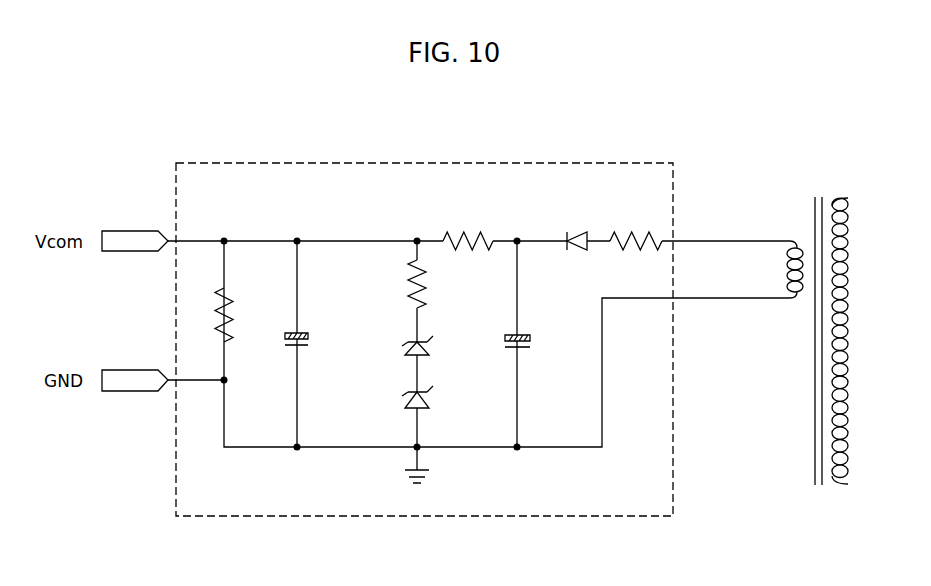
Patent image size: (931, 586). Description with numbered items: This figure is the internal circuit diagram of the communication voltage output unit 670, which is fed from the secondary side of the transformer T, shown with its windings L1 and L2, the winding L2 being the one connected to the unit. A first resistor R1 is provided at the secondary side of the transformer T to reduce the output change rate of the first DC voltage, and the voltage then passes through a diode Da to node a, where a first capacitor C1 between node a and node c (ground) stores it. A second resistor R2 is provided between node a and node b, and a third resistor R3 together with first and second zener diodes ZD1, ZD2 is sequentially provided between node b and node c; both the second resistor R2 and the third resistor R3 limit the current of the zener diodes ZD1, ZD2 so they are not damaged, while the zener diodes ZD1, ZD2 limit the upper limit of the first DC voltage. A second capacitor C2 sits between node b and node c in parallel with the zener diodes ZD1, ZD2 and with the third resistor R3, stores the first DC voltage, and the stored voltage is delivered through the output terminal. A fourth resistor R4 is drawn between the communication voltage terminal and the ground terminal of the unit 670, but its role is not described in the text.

The communication voltage output unit 670 is at (617, 163).
The first resistor R1 is at (636, 230).
The second resistor R2 is at (468, 230).
The third resistor R3 is at (401, 291).
The resistor R4 is at (209, 315).
The first capacitor C1 is at (505, 344).
The second capacitor C2 is at (308, 344).
The first zener diode ZD1 is at (397, 364).
The second zener diode ZD2 is at (397, 416).
The diode Da is at (575, 230).
The transformer T is at (819, 330).
The primary winding L1 is at (854, 341).
The secondary winding L2 is at (782, 270).